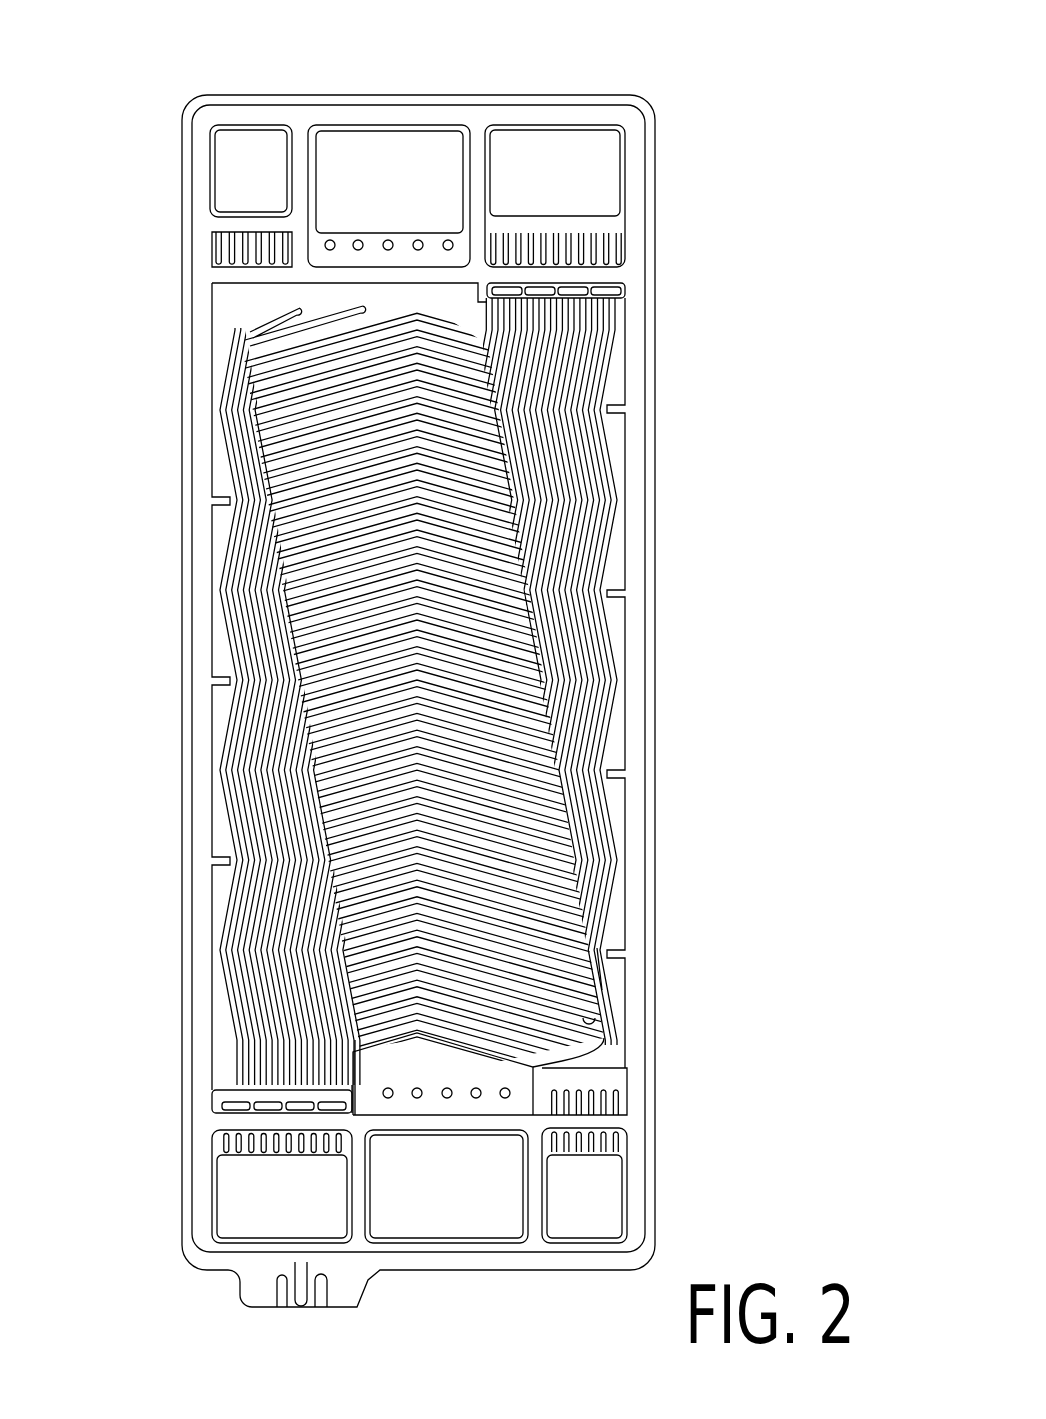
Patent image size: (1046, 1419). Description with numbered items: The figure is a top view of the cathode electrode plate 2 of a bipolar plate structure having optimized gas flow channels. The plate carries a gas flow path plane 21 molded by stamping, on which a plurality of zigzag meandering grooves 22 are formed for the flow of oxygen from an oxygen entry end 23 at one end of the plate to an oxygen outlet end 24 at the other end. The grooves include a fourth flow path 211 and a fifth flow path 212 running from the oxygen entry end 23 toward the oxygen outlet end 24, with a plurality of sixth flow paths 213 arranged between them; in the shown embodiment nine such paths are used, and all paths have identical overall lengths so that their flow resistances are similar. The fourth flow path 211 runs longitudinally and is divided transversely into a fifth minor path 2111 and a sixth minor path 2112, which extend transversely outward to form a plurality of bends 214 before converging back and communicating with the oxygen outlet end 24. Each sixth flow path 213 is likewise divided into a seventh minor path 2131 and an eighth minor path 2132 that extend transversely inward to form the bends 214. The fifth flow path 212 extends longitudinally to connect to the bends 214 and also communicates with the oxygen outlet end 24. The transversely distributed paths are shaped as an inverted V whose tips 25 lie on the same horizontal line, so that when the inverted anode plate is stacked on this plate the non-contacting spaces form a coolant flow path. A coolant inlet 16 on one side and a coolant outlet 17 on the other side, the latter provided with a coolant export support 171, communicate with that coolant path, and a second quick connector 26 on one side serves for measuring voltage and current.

The cathode electrode plate 2 is at (666, 96).
The coolant inlet 16 is at (344, 148).
The oxygen entry end 23 is at (589, 148).
The oxygen outlet end 24 is at (240, 1190).
The coolant outlet 17 is at (408, 1216).
The coolant export support 171 is at (475, 1098).
The second quick connector 26 is at (265, 1293).
The gas flow path plane 21 is at (210, 520).
The zigzag meandering grooves 22 is at (225, 633).
The fourth flow path 211 is at (622, 880).
The fifth flow path 212 is at (520, 297).
The sixth flow paths 213 is at (598, 333).
The bends 214 is at (240, 350).
The tips 25 is at (420, 304).
The fifth minor path 2111 is at (568, 1063).
The sixth minor path 2112 is at (570, 1042).
The seventh minor path 2131 is at (590, 1015).
The eighth minor path 2132 is at (598, 952).